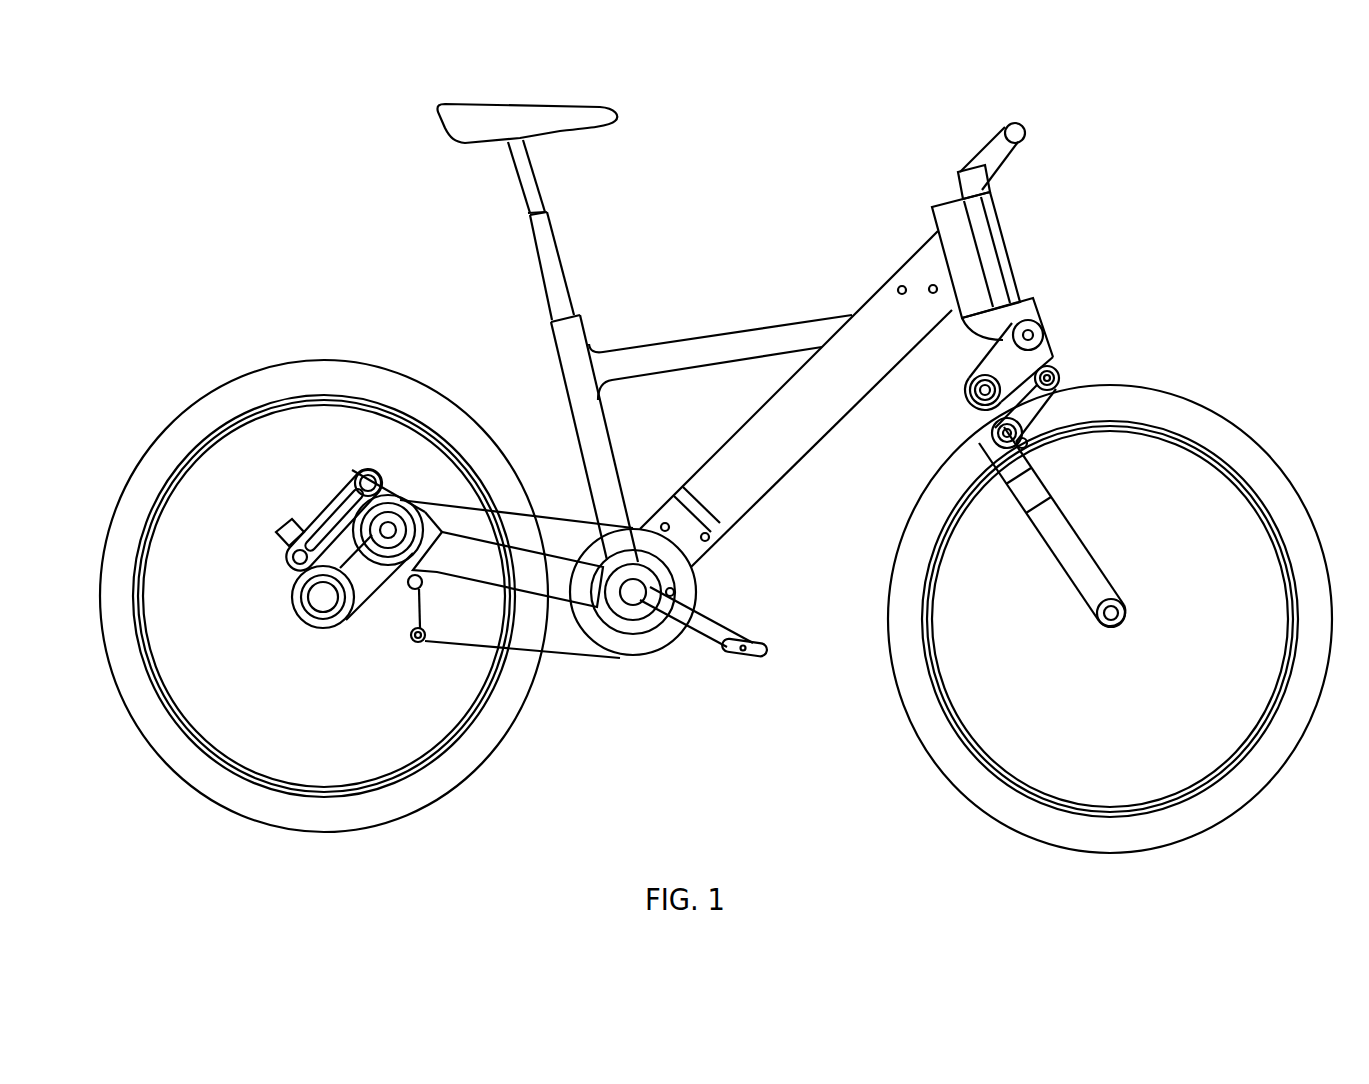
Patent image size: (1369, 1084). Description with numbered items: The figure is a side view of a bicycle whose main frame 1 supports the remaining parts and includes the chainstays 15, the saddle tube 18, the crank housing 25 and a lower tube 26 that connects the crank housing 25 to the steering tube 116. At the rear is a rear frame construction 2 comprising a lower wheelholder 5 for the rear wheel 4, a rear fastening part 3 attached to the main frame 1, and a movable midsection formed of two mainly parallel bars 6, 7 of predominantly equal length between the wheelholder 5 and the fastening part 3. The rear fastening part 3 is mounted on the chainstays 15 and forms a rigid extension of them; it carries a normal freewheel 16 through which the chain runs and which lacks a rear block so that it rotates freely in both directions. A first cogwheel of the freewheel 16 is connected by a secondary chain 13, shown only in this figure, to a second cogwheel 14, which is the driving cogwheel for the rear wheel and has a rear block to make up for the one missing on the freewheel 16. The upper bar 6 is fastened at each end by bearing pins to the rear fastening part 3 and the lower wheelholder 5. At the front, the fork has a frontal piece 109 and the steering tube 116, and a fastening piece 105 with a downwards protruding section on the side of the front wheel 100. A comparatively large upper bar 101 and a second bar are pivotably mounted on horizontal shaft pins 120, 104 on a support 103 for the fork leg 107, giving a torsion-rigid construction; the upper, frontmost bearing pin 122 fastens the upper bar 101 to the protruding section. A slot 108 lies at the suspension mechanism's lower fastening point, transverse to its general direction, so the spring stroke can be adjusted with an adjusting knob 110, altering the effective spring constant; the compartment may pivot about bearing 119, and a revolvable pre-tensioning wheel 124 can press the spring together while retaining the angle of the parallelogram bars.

The main frame 1 is at (555, 433).
The rear frame construction 2 is at (312, 508).
The rear fastening part 3 is at (400, 481).
The rear wheel 4 is at (167, 725).
The lower wheelholder 5 is at (280, 537).
The upper bar 6 is at (350, 487).
The bar 7 is at (355, 570).
The secondary chain 13 is at (358, 582).
The second cogwheel 14 is at (347, 597).
The chainstays 15 is at (530, 573).
The freewheel 16 is at (433, 517).
The saddle tube 18 is at (598, 454).
The crank housing 25 is at (650, 585).
The lower tube 26 is at (733, 493).
The front wheel 100 is at (1309, 661).
The upper bar 101 is at (998, 361).
The support 103 is at (965, 417).
The shaft pin 104 is at (1006, 477).
The fastening piece 105 is at (1000, 360).
The fork leg 107 is at (1086, 562).
The slot 108 is at (998, 452).
The frontal piece 109 is at (998, 263).
The adjusting knob 110 is at (1000, 434).
The steering tube 116 is at (960, 255).
The bearing 119 is at (1057, 368).
The shaft pin 120 is at (968, 390).
The upper frontmost bearing pin 122 is at (1043, 332).
The pre-tensioning wheel 124 is at (1035, 442).